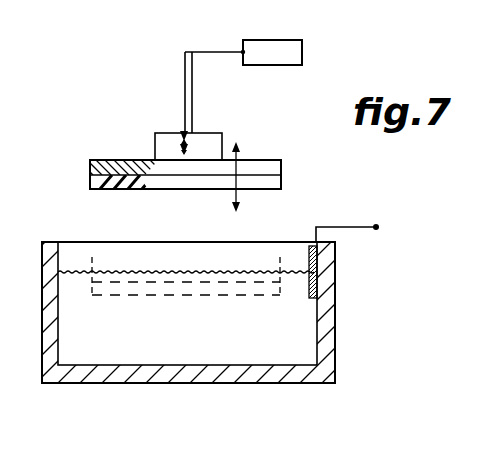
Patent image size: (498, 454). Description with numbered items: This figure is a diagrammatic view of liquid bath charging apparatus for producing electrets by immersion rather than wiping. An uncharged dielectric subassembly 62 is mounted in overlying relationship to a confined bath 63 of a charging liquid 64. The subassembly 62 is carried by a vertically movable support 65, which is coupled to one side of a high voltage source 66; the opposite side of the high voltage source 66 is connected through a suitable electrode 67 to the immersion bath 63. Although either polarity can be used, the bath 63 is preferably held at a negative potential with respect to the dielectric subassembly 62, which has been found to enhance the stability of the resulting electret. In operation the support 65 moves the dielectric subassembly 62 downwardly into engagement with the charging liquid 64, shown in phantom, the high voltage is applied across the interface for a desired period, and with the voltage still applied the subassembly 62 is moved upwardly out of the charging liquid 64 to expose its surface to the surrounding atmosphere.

The dielectric subassembly 62 is at (281, 172).
The confined bath 63 is at (335, 318).
The charging liquid 64 is at (207, 332).
The vertically movable support 65 is at (222, 141).
The high voltage source 66 is at (292, 40).
The electrode 67 is at (317, 272).